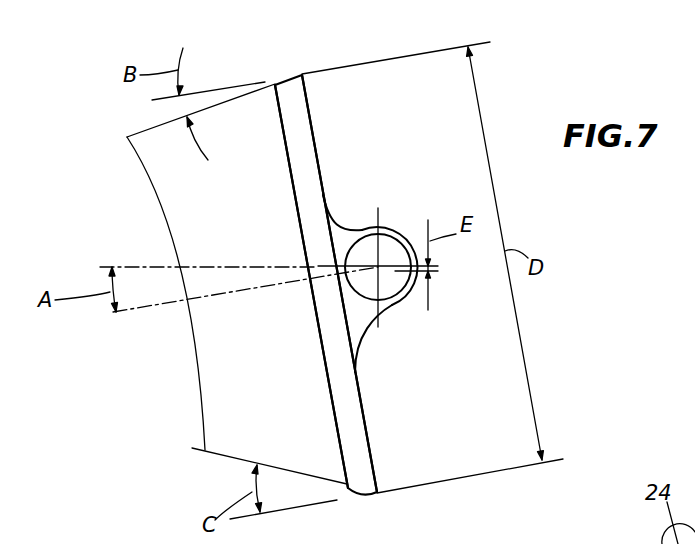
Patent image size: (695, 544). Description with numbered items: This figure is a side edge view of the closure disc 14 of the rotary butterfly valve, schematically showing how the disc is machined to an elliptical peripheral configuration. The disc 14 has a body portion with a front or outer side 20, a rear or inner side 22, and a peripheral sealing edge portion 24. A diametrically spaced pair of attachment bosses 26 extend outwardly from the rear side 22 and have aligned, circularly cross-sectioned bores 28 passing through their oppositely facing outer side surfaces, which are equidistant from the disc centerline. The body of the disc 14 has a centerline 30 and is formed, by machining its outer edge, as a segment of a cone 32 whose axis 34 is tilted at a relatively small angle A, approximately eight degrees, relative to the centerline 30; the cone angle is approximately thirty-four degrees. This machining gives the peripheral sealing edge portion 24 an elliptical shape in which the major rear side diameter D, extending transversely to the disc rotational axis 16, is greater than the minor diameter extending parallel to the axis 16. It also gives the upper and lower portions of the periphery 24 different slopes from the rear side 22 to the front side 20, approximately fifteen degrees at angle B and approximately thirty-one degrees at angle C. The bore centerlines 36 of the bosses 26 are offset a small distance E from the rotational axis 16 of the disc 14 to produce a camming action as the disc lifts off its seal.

The closure disc 14 is at (345, 413).
The rotational axis 16 is at (380, 268).
The front or outer side 20 is at (283, 117).
The rear or inner side 22 is at (311, 115).
The peripheral sealing edge portion 24 is at (279, 80).
The attachment bosses 26 is at (336, 212).
The bores 28 is at (392, 250).
The centerline 30 is at (233, 293).
The cone 32 is at (227, 457).
The axis 34 is at (290, 266).
The bore centerlines 36 is at (376, 266).